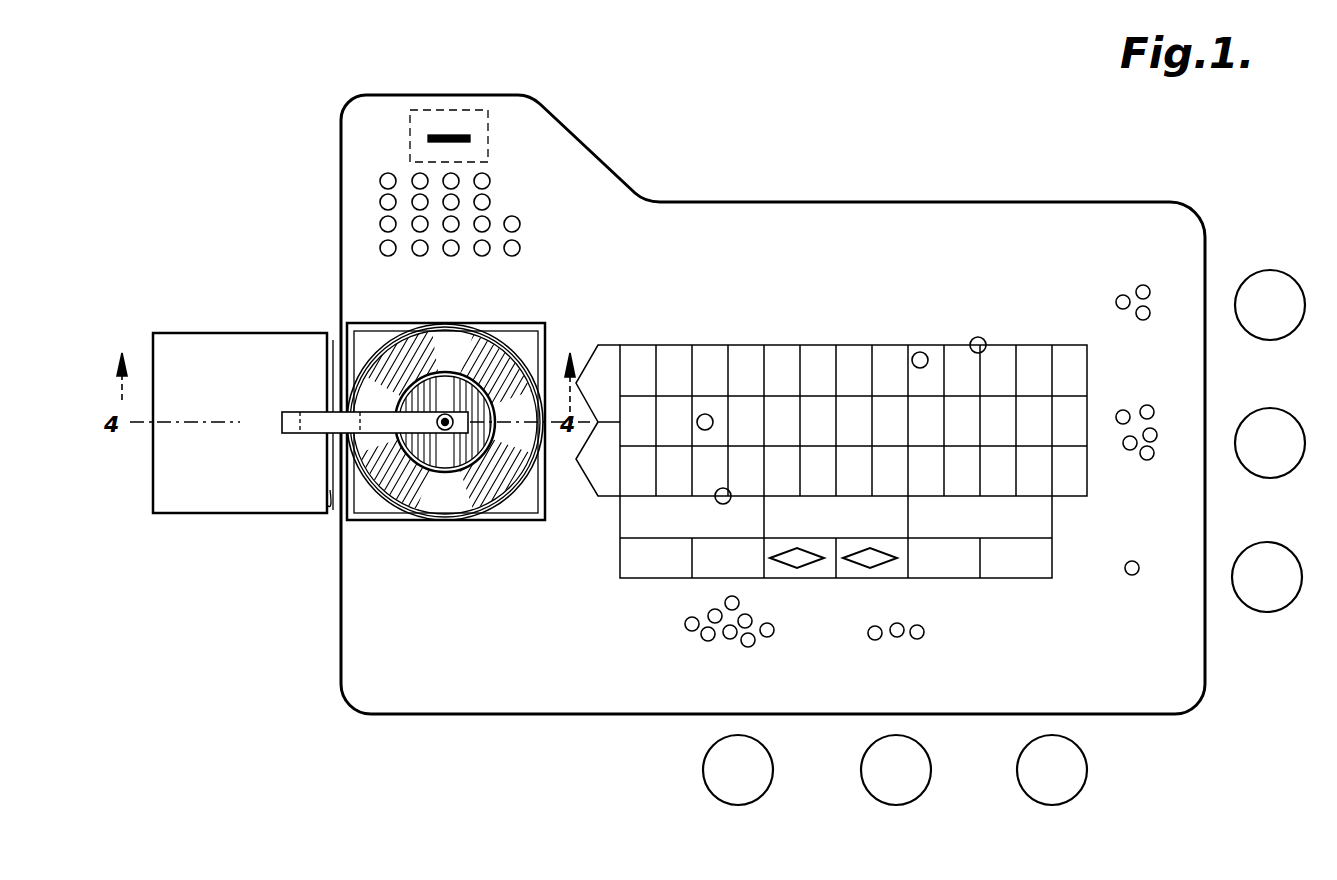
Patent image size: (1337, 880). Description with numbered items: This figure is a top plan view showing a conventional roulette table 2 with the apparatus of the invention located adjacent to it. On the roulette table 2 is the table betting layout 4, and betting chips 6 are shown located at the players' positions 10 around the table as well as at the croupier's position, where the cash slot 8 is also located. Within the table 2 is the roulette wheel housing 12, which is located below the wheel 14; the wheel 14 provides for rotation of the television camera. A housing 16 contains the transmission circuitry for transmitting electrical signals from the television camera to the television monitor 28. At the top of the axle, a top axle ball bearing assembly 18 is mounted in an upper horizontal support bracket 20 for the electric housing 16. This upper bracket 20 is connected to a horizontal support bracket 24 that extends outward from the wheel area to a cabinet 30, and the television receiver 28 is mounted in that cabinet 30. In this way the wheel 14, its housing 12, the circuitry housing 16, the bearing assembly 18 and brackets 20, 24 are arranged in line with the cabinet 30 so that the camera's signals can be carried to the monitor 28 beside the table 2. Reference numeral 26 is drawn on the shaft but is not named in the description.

The roulette table 2 is at (1000, 201).
The table betting layout 4 is at (858, 365).
The betting chips 6 is at (482, 181).
The cash slot 8 is at (455, 138).
The players' positions 10 is at (737, 770).
The roulette wheel housing 12 is at (541, 332).
The wheel 14 is at (444, 425).
The housing for transmission circuitry 16 is at (462, 452).
The top axle ball bearing assembly 18 is at (450, 416).
The upper horizontal support bracket 20 is at (380, 412).
The horizontal support bracket 24 is at (320, 433).
The shaft end 26 is at (291, 420).
The television monitor 28 is at (330, 495).
The cabinet 30 is at (245, 350).